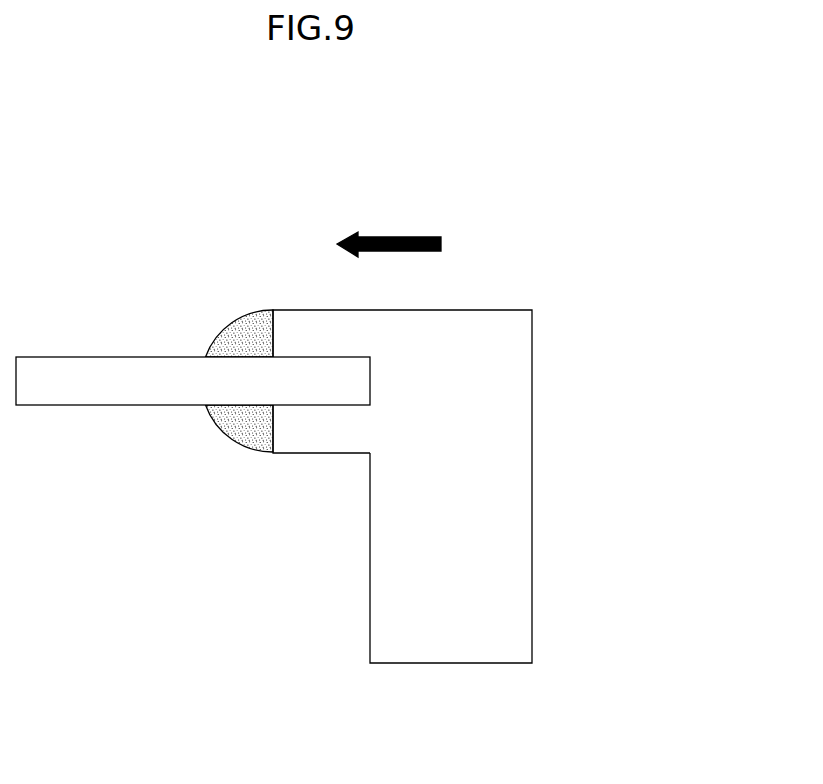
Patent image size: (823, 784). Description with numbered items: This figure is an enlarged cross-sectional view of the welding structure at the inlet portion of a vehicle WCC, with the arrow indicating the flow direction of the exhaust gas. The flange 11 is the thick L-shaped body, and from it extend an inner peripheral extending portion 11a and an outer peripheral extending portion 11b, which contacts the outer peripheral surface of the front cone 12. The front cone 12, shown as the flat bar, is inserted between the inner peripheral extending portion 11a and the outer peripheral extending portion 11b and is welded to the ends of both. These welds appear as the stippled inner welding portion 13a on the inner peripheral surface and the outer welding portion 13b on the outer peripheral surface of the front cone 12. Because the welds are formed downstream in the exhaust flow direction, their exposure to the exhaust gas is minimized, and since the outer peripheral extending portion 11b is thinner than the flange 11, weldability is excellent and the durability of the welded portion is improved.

The flange 11 is at (508, 510).
The inner peripheral extending portion 11a is at (323, 325).
The outer peripheral extending portion 11b is at (322, 435).
The front cone 12 is at (77, 370).
The inner welding portion 13a is at (243, 330).
The outer welding portion 13b is at (225, 435).